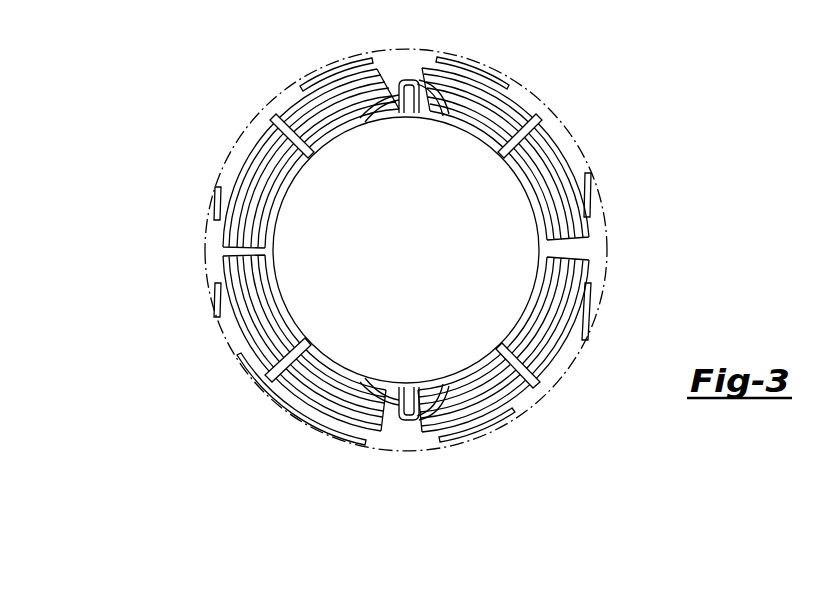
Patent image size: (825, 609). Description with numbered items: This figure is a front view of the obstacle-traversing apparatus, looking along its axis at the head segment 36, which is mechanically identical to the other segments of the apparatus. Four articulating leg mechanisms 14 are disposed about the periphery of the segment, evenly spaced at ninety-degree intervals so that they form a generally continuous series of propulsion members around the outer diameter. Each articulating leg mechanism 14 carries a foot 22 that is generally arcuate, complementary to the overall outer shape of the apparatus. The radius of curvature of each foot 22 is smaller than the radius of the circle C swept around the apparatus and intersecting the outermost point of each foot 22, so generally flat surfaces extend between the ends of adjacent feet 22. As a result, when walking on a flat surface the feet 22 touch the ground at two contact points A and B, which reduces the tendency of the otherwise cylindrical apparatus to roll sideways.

The articulating leg mechanism 14 is at (323, 71).
The foot 22 is at (222, 193).
The head segment 36 is at (413, 214).
The contact point A is at (436, 441).
The contact point B is at (370, 438).
The circle C is at (388, 53).